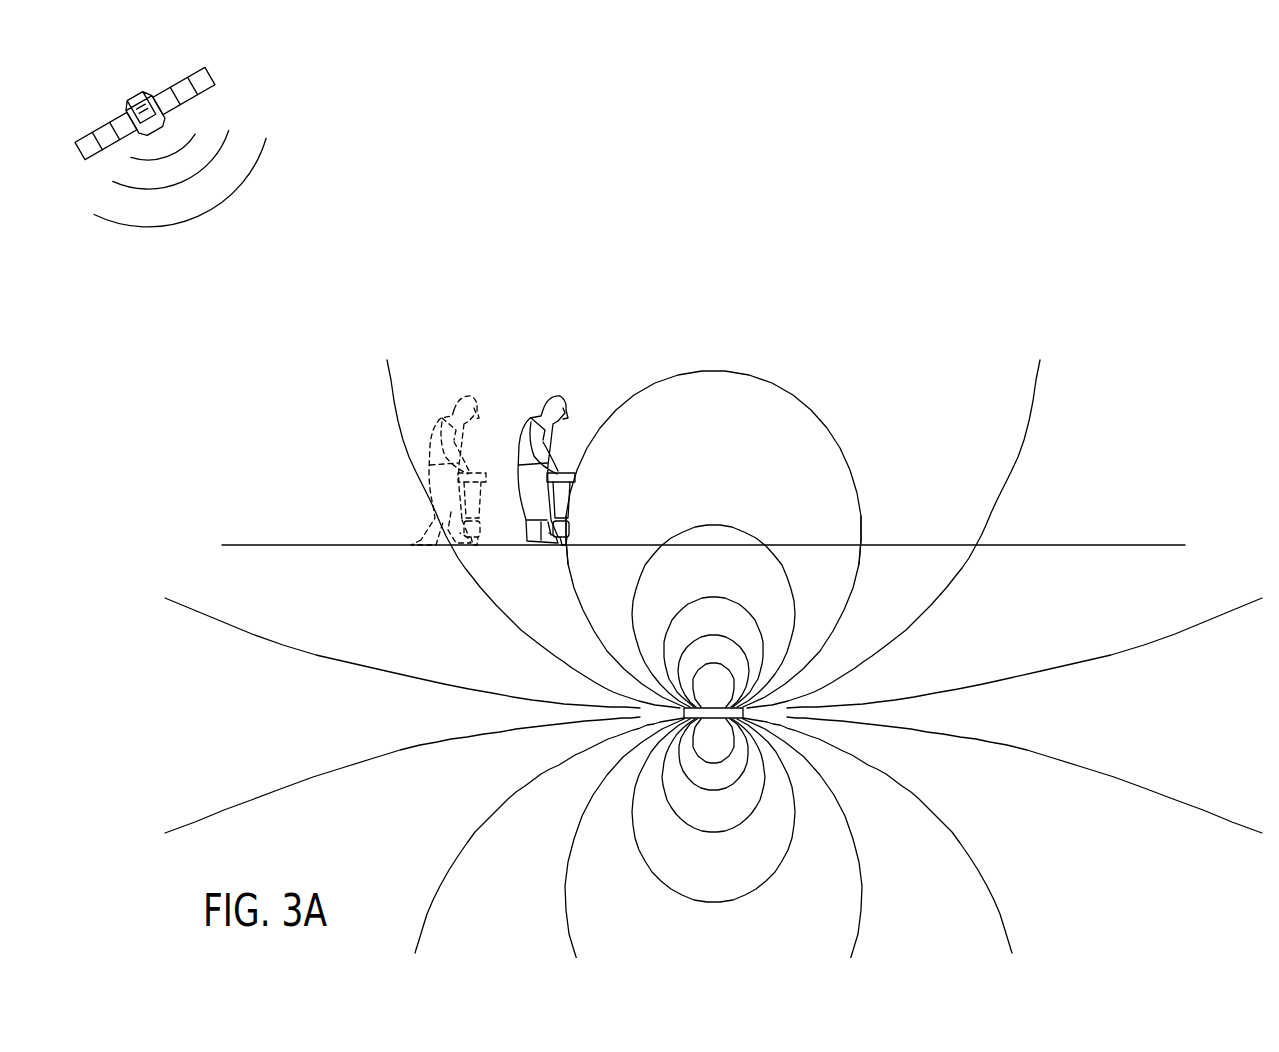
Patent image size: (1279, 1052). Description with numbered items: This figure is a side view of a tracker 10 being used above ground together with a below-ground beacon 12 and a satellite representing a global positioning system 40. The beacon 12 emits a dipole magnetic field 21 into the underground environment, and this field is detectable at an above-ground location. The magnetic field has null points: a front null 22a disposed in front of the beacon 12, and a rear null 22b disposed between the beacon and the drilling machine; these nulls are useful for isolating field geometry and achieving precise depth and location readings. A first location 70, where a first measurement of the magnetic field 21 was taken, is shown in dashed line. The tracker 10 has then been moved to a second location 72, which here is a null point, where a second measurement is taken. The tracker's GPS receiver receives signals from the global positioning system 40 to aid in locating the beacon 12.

The global positioning system 40 is at (215, 80).
The first location 70 is at (449, 367).
The second location 72 is at (565, 368).
The tracker 10 is at (565, 540).
The dipole magnetic field 21 is at (762, 378).
The front null 22a is at (860, 543).
The rear null 22b is at (565, 542).
The beacon 12 is at (743, 708).